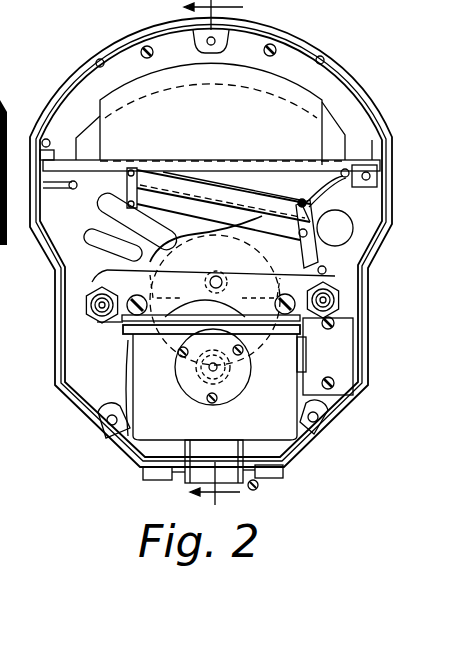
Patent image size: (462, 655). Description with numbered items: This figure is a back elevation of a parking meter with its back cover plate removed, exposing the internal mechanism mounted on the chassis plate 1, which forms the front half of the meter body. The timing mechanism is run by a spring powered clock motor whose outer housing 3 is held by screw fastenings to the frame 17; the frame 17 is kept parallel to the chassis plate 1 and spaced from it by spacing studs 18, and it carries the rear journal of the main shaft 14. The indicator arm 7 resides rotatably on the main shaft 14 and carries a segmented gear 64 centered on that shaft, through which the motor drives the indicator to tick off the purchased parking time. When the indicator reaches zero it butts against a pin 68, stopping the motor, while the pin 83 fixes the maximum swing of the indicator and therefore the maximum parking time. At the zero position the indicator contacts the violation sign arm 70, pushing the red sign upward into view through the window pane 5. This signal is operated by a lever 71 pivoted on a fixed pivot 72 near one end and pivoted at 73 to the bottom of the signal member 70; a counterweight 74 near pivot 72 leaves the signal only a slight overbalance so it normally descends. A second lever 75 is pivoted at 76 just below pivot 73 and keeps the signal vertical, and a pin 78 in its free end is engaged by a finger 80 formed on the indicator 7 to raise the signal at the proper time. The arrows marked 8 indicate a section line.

The chassis plate 1 is at (50, 341).
The clock motor housing 3 is at (160, 416).
The transparent pane 5 is at (88, 145).
The indicator arm 7 is at (347, 143).
The section line 8 is at (220, 253).
The main shaft 14 is at (207, 271).
The frame 17 is at (108, 284).
The spacing studs 18 is at (96, 321).
The segmented gear 64 is at (130, 227).
The pin 68 is at (347, 182).
The violation sign arm 70 is at (222, 114).
The lever 71 is at (223, 205).
The fixed pivot 72 is at (308, 203).
The pivot 73 is at (140, 155).
The counterweight 74 is at (335, 228).
The second lever 75 is at (215, 290).
The pivot 76 is at (122, 199).
The pin 78 is at (318, 273).
The finger 80 is at (324, 256).
The pin 83 is at (45, 185).